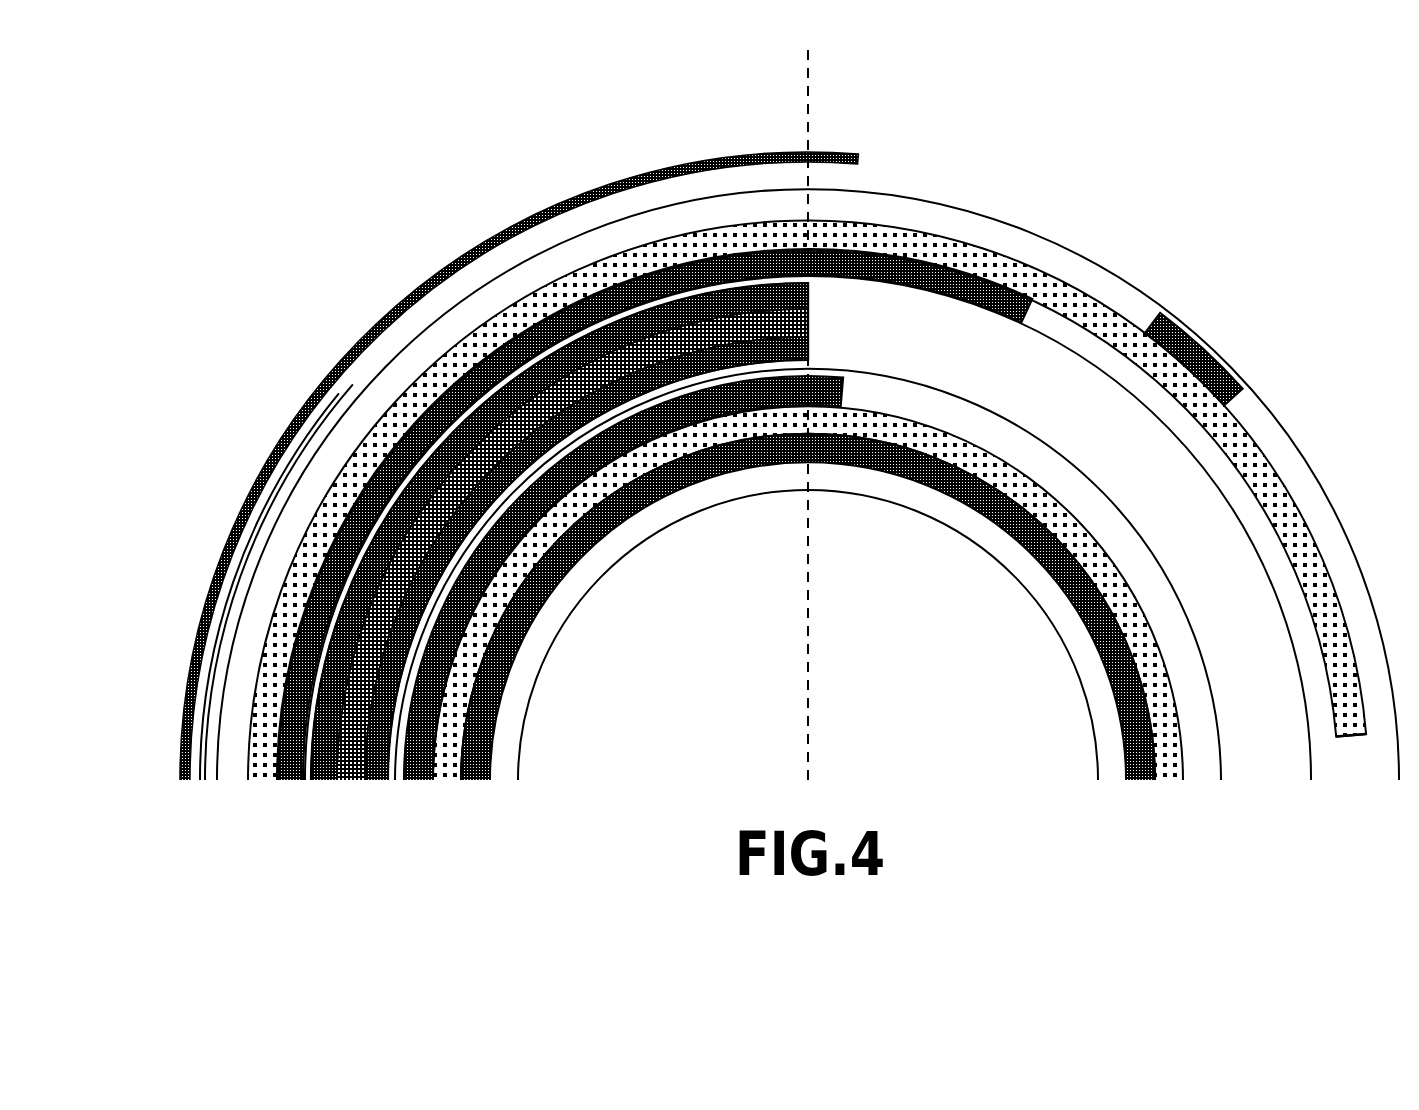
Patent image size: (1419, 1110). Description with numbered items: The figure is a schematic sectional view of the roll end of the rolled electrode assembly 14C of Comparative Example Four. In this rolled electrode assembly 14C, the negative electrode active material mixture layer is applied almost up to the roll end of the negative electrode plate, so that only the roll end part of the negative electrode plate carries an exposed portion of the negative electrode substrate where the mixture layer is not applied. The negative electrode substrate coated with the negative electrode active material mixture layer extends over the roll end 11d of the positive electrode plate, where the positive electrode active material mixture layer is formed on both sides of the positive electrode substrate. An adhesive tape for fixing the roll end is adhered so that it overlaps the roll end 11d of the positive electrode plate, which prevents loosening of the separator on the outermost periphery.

The rolled electrode assembly 14C is at (280, 71).
The roll end of the positive electrode plate 11d is at (846, 338).